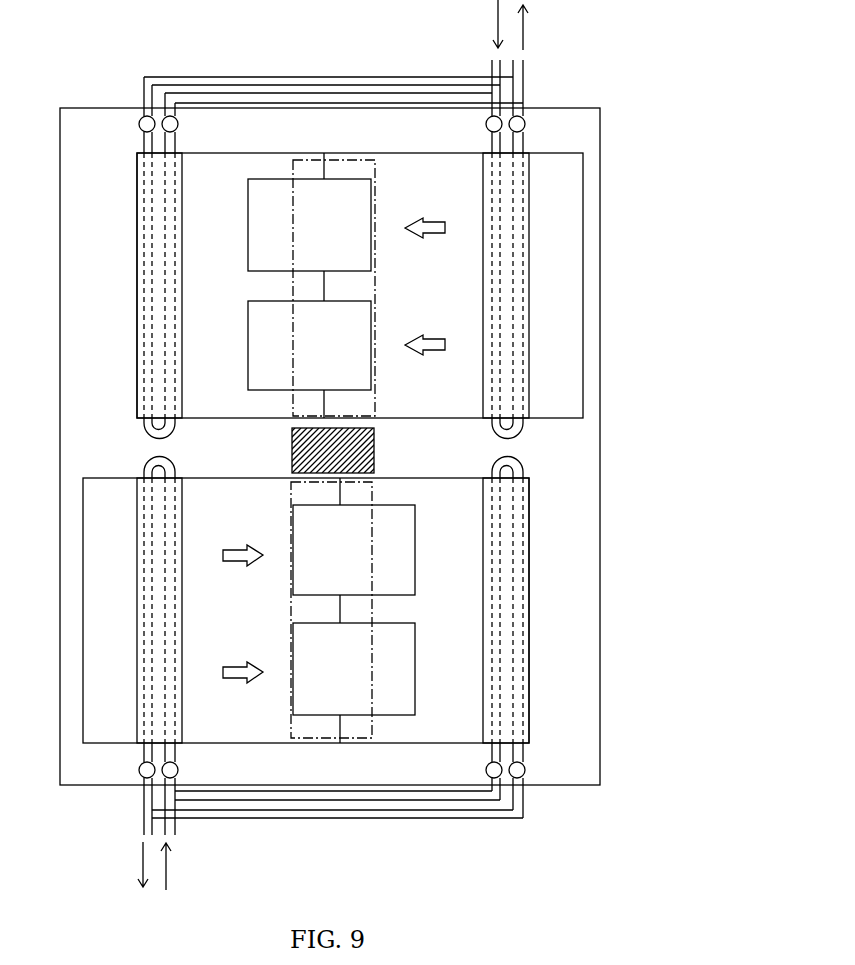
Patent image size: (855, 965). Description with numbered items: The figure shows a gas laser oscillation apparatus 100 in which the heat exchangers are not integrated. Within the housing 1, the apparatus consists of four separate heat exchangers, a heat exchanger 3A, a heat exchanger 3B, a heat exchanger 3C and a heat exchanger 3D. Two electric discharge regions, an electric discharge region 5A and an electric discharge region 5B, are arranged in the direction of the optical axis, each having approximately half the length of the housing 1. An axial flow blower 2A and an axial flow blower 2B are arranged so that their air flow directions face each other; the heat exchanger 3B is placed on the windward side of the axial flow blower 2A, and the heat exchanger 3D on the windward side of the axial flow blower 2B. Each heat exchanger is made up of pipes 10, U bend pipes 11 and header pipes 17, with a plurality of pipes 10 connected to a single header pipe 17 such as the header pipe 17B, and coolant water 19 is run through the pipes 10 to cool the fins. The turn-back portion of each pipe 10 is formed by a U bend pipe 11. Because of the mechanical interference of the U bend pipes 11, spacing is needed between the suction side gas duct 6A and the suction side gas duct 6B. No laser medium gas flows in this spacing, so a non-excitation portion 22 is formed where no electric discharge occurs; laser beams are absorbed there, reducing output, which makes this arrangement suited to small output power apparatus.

The housing 1 is at (104, 106).
The gas laser oscillation apparatus 100 is at (684, 23).
The axial flow blower 2A is at (415, 548).
The axial flow blower 2B is at (248, 222).
The heat exchanger 3A is at (530, 612).
The heat exchanger 3B is at (137, 600).
The heat exchanger 3C is at (137, 275).
The heat exchanger 3D is at (529, 275).
The electric discharge region 5A is at (292, 614).
The electric discharge region 5B is at (375, 290).
The suction side gas duct 6A is at (93, 480).
The suction side gas duct 6B is at (557, 418).
The pipes 10 is at (138, 136).
The U bend pipes 11 is at (174, 459).
The header pipes 17 is at (180, 125).
The header pipe 17B is at (178, 772).
The coolant water 19 is at (490, 20).
The non-excitation portion 22 is at (375, 456).